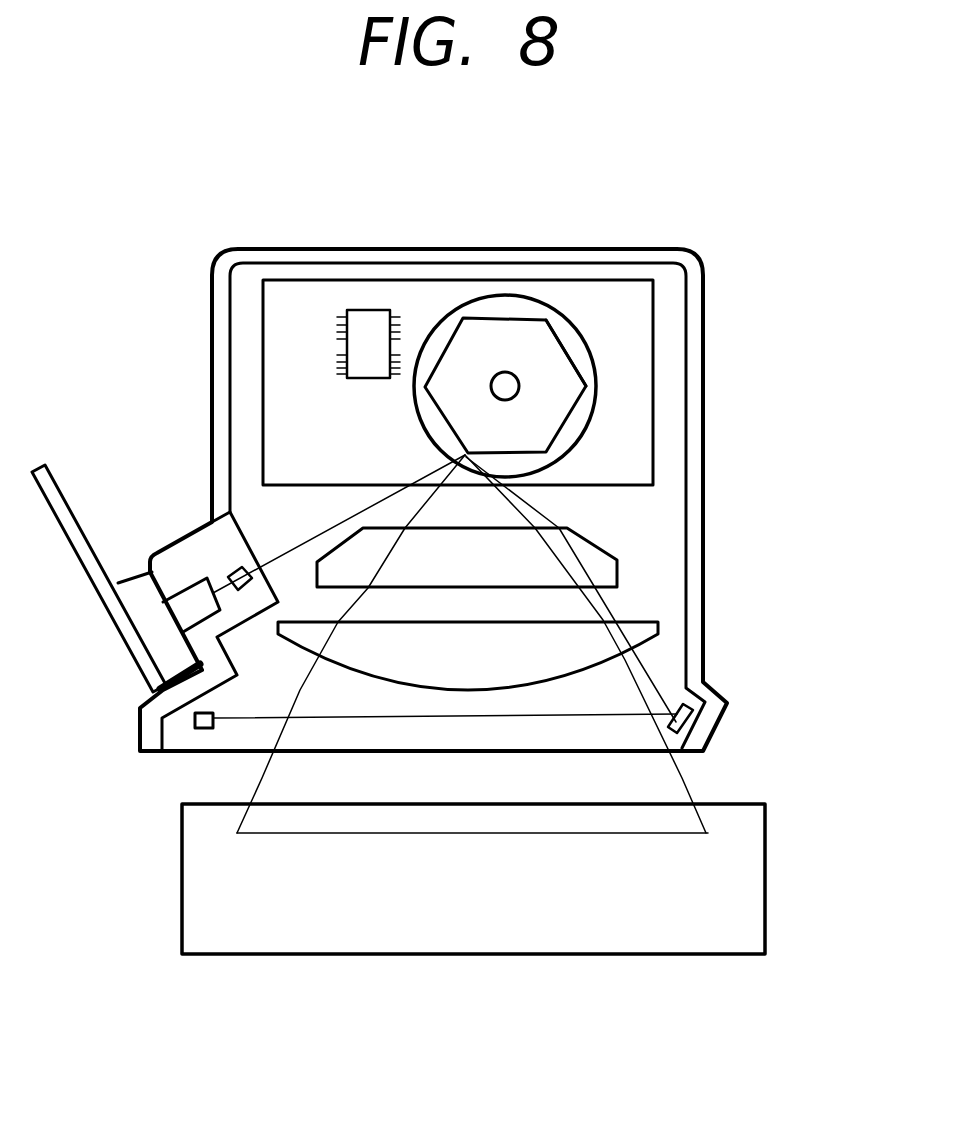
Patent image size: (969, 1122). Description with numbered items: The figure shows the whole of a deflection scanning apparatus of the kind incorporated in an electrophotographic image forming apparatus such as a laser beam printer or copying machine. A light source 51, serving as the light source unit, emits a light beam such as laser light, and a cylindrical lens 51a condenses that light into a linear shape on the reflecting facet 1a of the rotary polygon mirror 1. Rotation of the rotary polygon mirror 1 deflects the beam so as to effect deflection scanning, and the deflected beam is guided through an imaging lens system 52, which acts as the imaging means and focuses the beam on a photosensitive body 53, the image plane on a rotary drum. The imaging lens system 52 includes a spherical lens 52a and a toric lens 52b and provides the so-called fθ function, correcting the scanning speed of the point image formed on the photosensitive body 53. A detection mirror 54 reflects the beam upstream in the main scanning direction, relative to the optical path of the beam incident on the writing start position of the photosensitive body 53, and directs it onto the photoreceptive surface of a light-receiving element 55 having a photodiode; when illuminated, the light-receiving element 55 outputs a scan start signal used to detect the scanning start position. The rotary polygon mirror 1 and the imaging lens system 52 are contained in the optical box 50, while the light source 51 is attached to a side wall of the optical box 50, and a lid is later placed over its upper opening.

The optical box 50 is at (633, 246).
The rotary polygon mirror 1 is at (570, 380).
The reflecting facet 1a is at (553, 329).
The light source 51 is at (150, 628).
The cylindrical lens 51a is at (237, 566).
The imaging lens system 52 is at (566, 609).
The spherical lens 52a is at (612, 568).
The toric lens 52b is at (647, 626).
The photosensitive body 53 is at (733, 880).
The detection mirror 54 is at (697, 722).
The light-receiving element 55 is at (200, 729).